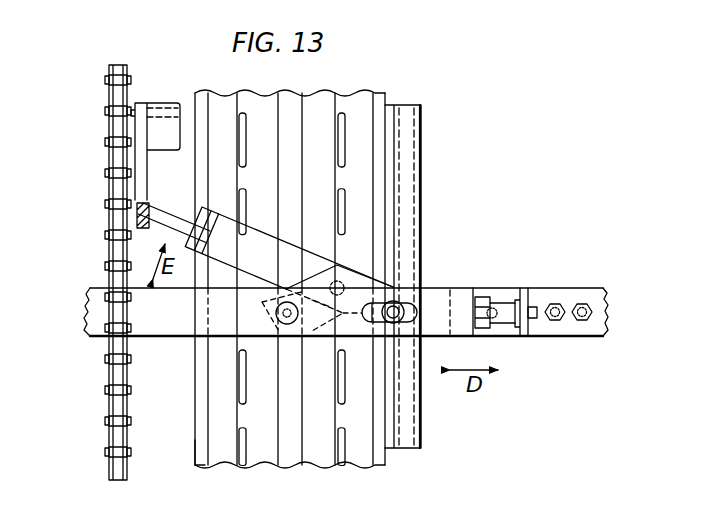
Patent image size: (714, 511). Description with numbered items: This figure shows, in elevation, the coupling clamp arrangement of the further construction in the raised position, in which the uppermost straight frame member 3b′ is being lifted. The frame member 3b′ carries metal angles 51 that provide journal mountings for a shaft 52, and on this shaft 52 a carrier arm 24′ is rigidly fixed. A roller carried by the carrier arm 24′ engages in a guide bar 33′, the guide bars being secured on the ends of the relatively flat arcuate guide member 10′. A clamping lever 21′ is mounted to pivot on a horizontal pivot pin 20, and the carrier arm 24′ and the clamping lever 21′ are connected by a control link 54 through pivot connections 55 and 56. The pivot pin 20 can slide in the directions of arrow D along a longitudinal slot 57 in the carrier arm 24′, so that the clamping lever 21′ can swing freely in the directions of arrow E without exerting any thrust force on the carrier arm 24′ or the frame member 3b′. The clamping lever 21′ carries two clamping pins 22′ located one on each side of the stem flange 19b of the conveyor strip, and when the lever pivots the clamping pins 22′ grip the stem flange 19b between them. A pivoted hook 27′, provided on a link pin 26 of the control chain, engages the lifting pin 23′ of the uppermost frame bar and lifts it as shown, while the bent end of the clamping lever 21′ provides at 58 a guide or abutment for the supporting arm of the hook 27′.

The arcuate guide member 10′ is at (198, 451).
The stem flange 19b is at (287, 113).
The pivot pin 20 is at (401, 305).
The clamping lever 21′ is at (263, 235).
The clamping pins 22′ is at (317, 266).
The lifting pin 23′ is at (104, 272).
The carrier arm 24′ is at (440, 289).
The link pin 26 is at (160, 112).
The pivoted hook 27′ is at (135, 197).
The guide bar 33′ is at (421, 139).
The straight frame member 3b′ is at (548, 283).
The metal angles 51 is at (525, 287).
The shaft 52 is at (534, 319).
The control link 54 is at (322, 338).
The pivot connection 55 is at (281, 325).
The pivot connection 56 is at (340, 283).
The longitudinal slot 57 is at (366, 336).
The guide or abutment 58 is at (186, 252).